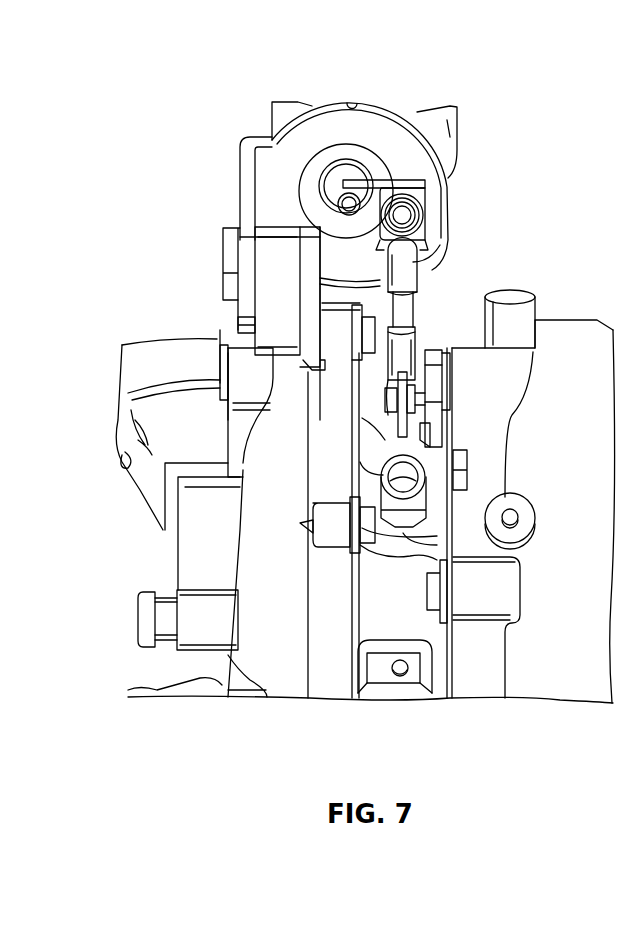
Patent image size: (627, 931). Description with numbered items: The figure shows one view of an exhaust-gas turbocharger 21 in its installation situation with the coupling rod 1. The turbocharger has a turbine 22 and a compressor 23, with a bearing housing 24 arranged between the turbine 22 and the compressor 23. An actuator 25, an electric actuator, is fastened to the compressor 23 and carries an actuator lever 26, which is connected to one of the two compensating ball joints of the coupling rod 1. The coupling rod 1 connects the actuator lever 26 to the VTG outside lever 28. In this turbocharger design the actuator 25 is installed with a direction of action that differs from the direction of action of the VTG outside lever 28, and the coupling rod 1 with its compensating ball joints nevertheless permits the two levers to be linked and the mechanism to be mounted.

The coupling rod 1 is at (416, 303).
The exhaust-gas turbocharger 21 is at (546, 253).
The turbine 22 is at (530, 705).
The compressor 23 is at (274, 705).
The bearing housing 24 is at (384, 705).
The actuator 25 is at (468, 130).
The actuator lever 26 is at (363, 197).
The VTG outside lever 28 is at (423, 377).